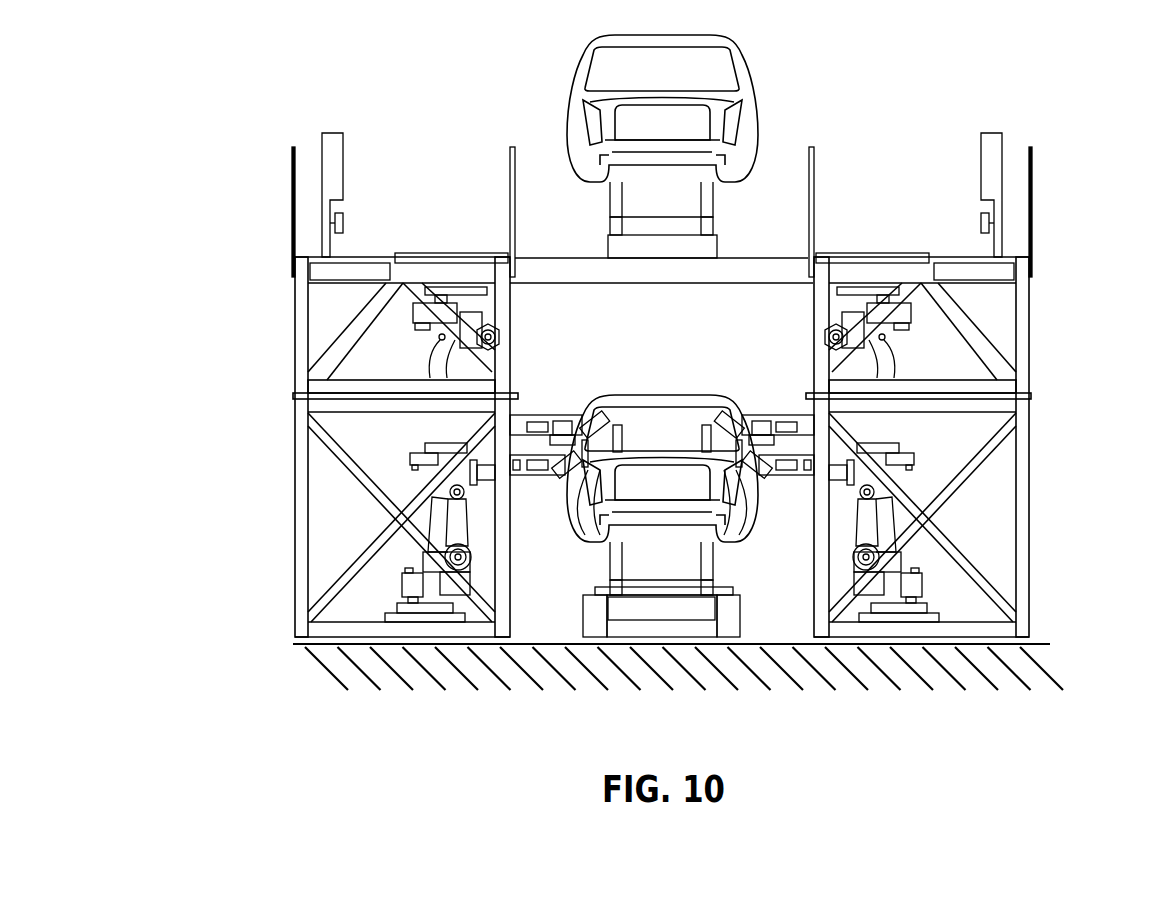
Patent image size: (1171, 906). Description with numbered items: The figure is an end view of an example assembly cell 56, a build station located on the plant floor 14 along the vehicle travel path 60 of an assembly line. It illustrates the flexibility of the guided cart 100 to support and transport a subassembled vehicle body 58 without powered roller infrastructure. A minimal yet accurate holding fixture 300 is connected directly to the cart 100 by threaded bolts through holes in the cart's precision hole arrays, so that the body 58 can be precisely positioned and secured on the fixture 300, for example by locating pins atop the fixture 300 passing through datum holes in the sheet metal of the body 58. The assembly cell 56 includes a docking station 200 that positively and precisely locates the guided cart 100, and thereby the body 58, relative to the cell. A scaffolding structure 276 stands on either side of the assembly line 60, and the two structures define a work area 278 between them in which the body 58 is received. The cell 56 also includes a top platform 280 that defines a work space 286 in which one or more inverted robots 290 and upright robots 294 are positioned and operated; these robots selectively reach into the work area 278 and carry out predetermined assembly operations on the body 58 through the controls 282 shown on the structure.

The plant floor 14 is at (622, 663).
The assembly cell 56 is at (1063, 150).
The vehicle body 58 is at (757, 63).
The vehicle travel path 60 is at (684, 652).
The guided cart 100 is at (628, 607).
The docking station 200 is at (748, 616).
The scaffolding structure 276 is at (278, 390).
The work area 278 is at (680, 357).
The top platform 280 is at (977, 272).
The controls 282 is at (344, 163).
The work space 286 is at (962, 451).
The inverted robot 290 is at (543, 417).
The upright robot 294 is at (913, 515).
The holding fixture 300 is at (700, 562).